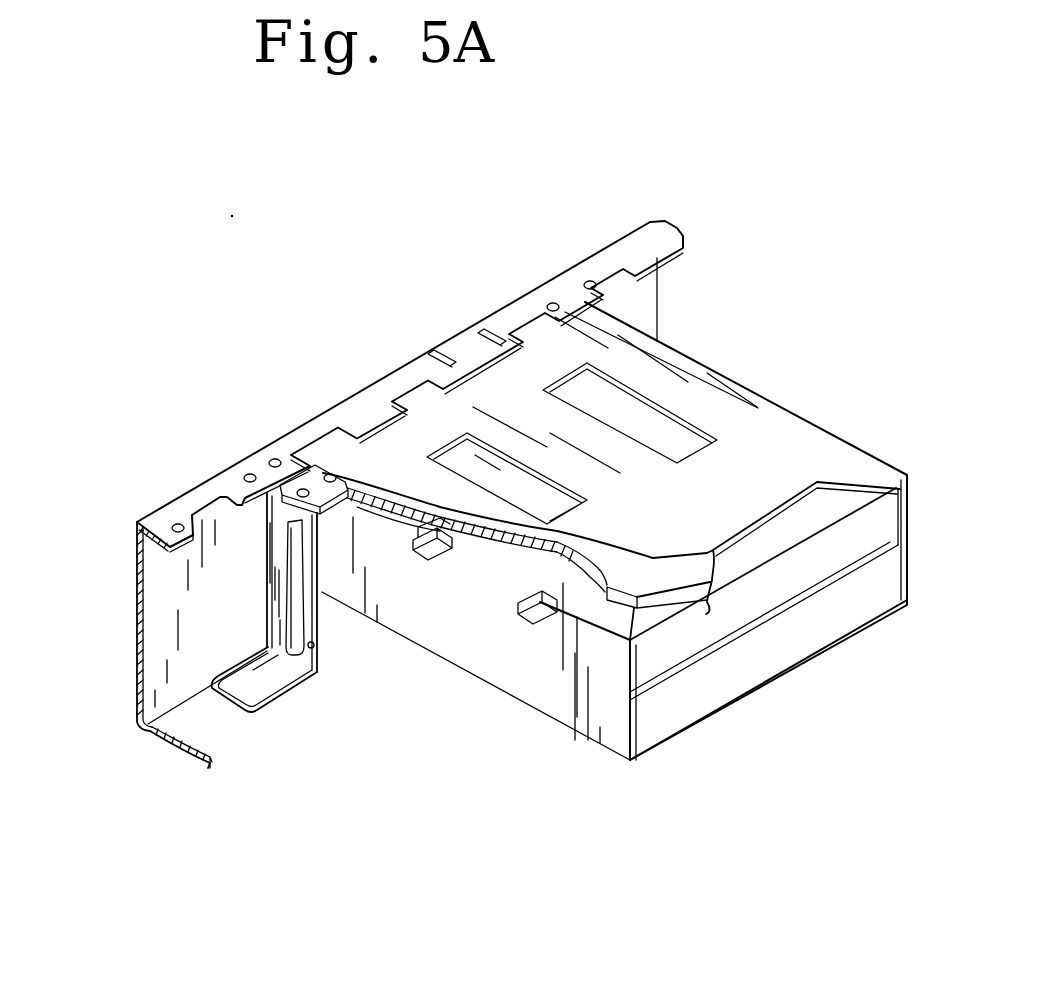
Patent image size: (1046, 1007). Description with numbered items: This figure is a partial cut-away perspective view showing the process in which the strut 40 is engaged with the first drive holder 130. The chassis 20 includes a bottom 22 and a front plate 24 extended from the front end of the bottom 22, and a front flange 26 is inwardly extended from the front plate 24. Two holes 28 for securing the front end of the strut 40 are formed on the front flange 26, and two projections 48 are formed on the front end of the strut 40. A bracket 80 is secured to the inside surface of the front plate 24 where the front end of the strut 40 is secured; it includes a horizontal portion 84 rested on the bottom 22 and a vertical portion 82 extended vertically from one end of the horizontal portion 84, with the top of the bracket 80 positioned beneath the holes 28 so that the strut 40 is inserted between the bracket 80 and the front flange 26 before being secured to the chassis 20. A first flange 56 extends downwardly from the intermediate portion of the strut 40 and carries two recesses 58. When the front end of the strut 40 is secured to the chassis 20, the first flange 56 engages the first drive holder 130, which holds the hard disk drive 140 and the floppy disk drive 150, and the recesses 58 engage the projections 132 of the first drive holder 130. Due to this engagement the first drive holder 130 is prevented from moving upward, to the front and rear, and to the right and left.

The chassis 20 is at (546, 279).
The bottom 22 is at (177, 727).
The front plate 24 is at (137, 640).
The front flange 26 is at (190, 503).
The holes 28 is at (275, 460).
The strut 40 is at (524, 635).
The projections 48 is at (328, 474).
The first flange 56 is at (397, 515).
The recesses 58 is at (550, 562).
The bracket 80 is at (291, 664).
The vertical portion 82 is at (310, 620).
The horizontal portion 84 is at (268, 686).
The first drive holder 130 is at (787, 437).
The projections 132 is at (518, 612).
The hard disk drive 140 is at (790, 580).
The floppy disk drive 150 is at (750, 676).